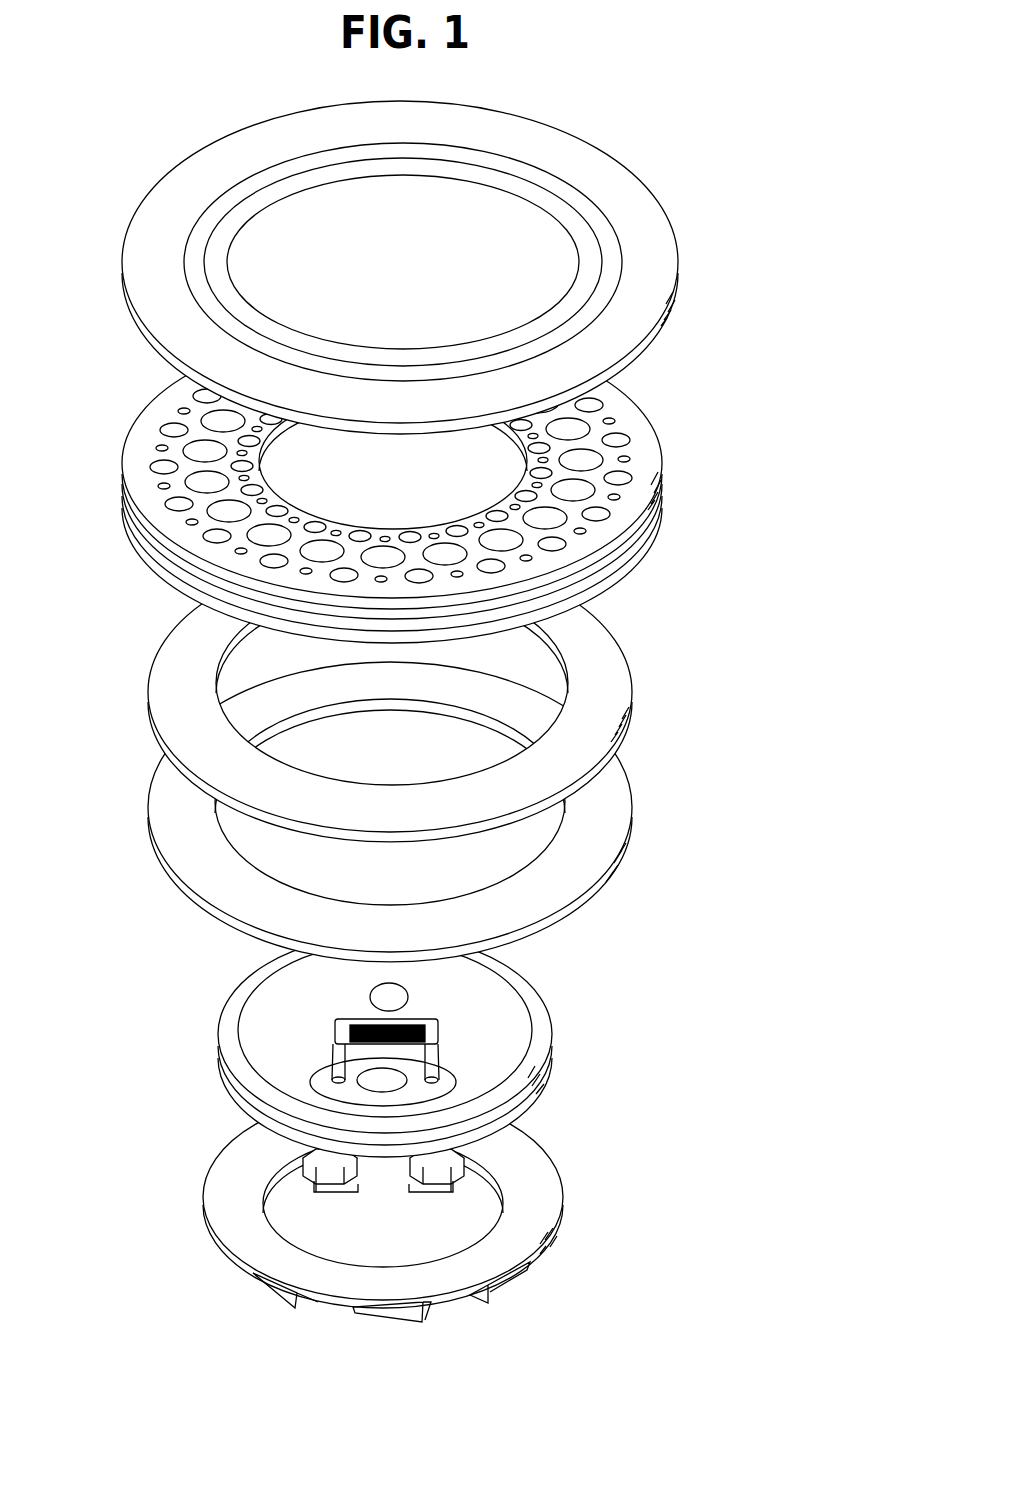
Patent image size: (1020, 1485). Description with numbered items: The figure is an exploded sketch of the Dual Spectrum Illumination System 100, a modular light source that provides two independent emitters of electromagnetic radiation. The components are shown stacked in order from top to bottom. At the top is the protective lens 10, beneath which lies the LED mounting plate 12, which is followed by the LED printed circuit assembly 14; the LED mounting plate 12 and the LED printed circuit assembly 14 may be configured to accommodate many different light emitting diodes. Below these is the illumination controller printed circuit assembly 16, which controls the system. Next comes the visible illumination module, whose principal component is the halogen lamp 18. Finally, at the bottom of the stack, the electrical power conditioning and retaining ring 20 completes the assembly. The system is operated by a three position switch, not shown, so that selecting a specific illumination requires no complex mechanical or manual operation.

The Dual Spectrum Illumination System 100 is at (133, 178).
The protective lens 10 is at (678, 261).
The LED mounting plate 12 is at (663, 468).
The LED printed circuit assembly 14 is at (633, 693).
The illumination controller printed circuit assembly 16 is at (633, 813).
The halogen lamp 18 is at (552, 1040).
The electrical power conditioning and retaining ring 20 is at (563, 1197).